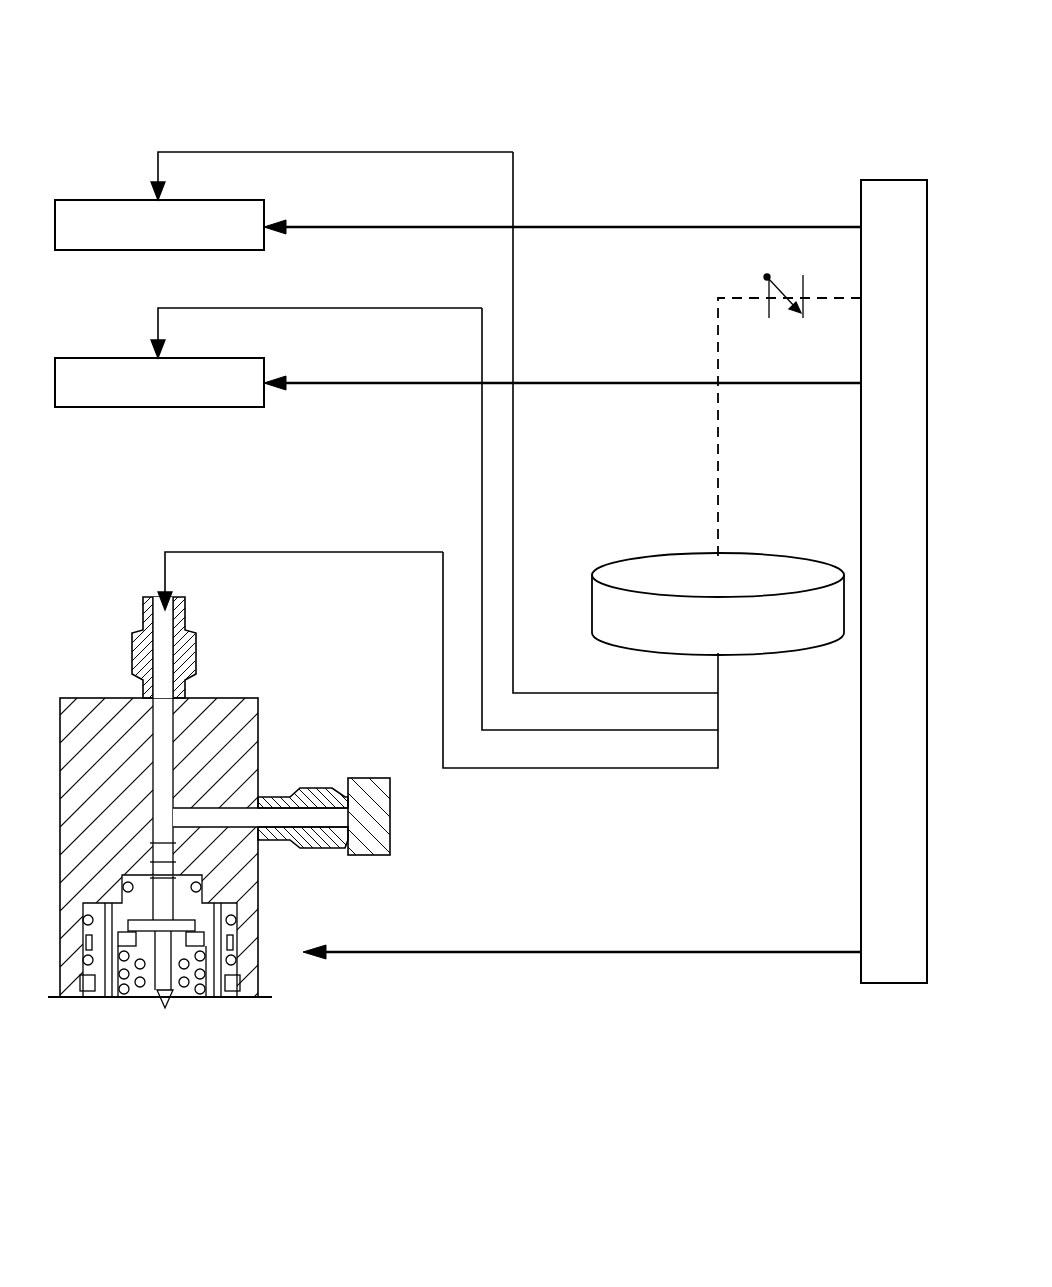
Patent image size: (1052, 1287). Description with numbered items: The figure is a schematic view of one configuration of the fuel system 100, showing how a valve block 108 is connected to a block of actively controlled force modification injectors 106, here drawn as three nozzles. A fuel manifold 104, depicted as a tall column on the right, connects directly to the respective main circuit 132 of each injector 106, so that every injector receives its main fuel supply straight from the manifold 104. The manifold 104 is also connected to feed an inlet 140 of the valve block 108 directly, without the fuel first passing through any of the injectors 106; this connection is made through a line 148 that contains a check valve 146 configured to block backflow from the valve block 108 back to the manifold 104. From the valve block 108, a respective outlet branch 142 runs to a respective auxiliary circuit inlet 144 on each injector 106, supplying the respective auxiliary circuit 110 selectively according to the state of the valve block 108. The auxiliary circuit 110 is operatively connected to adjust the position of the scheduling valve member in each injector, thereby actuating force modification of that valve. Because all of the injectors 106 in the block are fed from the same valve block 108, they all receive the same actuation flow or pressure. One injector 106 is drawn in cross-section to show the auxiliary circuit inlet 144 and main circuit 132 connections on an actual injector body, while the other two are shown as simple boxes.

The system 100 is at (68, 146).
The manifold 104 is at (888, 180).
The force modification injectors 106 is at (222, 252).
The valve block 108 is at (718, 592).
The auxiliary circuit 110 is at (580, 460).
The main circuit 132 is at (614, 225).
The inlet of the valve block 140 is at (738, 550).
The outlet branch 142 is at (445, 151).
The auxiliary circuit inlet 144 is at (145, 193).
The check valve 146 is at (777, 323).
The line 148 is at (716, 426).